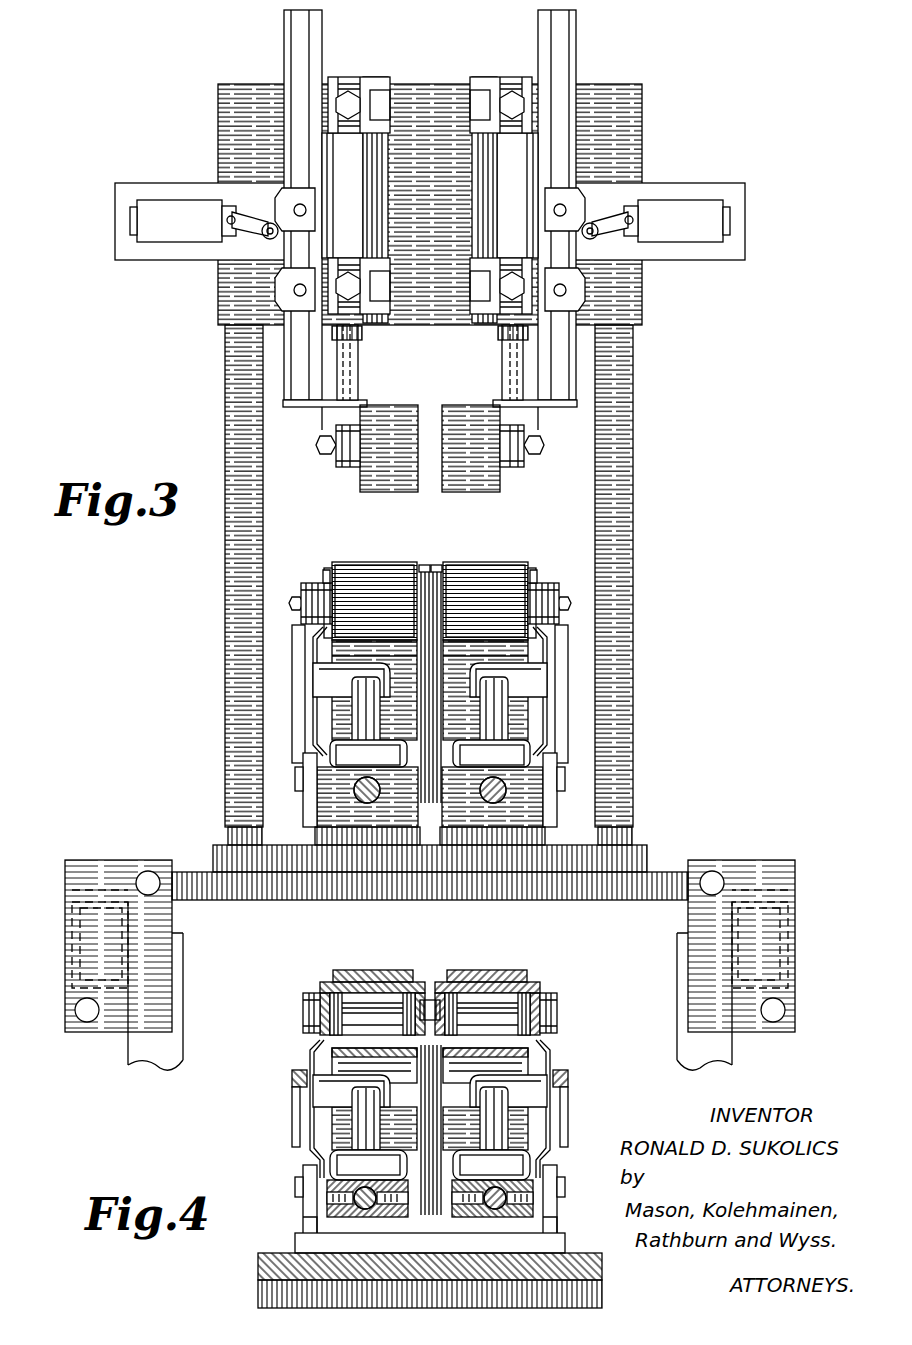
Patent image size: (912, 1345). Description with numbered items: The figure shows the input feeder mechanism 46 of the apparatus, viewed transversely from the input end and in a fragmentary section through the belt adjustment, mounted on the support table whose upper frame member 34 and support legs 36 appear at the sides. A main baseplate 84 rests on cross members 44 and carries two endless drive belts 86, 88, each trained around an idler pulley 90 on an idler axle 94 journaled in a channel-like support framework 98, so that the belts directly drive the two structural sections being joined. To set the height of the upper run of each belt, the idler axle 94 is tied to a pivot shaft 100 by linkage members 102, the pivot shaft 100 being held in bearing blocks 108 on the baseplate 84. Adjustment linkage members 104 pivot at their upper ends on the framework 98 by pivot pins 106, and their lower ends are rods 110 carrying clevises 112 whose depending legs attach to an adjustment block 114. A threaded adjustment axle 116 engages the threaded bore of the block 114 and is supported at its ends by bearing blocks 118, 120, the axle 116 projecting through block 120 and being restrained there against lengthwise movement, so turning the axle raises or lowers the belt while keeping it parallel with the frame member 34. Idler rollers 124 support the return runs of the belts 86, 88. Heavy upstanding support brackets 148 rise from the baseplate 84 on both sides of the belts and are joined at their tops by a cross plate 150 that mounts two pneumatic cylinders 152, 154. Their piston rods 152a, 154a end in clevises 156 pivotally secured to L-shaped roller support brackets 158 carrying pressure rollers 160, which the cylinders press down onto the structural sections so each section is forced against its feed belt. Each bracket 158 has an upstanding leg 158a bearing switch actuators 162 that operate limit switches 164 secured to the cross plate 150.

In FIG. 3, the upper frame member 34 is at (65, 953).
In FIG. 3, the support leg 36 is at (128, 1055).
In FIG. 3, the cross member 44 is at (248, 900).
In FIG. 4, the cross member 44 is at (258, 1294).
In FIG. 3, the input feeder mechanism 46 is at (733, 406).
In FIG. 3, the main baseplate 84 is at (655, 862).
In FIG. 4, the main baseplate 84 is at (258, 1262).
In FIG. 3, the endless drive belt 86 is at (378, 562).
In FIG. 4, the endless drive belt 86 is at (380, 1045).
In FIG. 3, the endless drive belt 88 is at (490, 562).
In FIG. 4, the endless drive belt 88 is at (480, 1045).
In FIG. 3, the idler pulley 90 is at (327, 568).
In FIG. 3, the idler axle 94 is at (290, 603).
In FIG. 3, the channel-like support framework 98 is at (323, 576).
In FIG. 4, the channel-like support framework 98 is at (306, 1008).
In FIG. 3, the pivot shaft 100 is at (295, 782).
In FIG. 4, the pivot shaft 100 is at (295, 1183).
In FIG. 3, the linkage member 102 is at (298, 690).
In FIG. 4, the linkage member 102 is at (292, 1078).
In FIG. 3, the adjustment linkage member 104 is at (316, 680).
In FIG. 4, the adjustment linkage member 104 is at (312, 1045).
In FIG. 4, the pivot pin 106 is at (370, 1010).
In FIG. 3, the bearing block 108 is at (304, 796).
In FIG. 4, the bearing block 108 is at (303, 1203).
In FIG. 3, the rod 110 is at (356, 722).
In FIG. 4, the rod 110 is at (358, 1115).
In FIG. 3, the clevis 112 is at (335, 757).
In FIG. 4, the clevis 112 is at (334, 1152).
In FIG. 4, the adjustment block 114 is at (340, 1212).
In FIG. 3, the threaded adjustment axle 116 is at (372, 802).
In FIG. 4, the threaded adjustment axle 116 is at (368, 1188).
In FIG. 4, the bearing block 118 is at (298, 1242).
In FIG. 3, the bearing block 120 is at (322, 815).
In FIG. 3, the idler roller 124 is at (332, 650).
In FIG. 4, the idler roller 124 is at (345, 1065).
In FIG. 3, the upstanding support bracket 148 is at (225, 440).
In FIG. 3, the cross plate 150 is at (630, 108).
In FIG. 3, the pneumatic cylinder 152 is at (386, 243).
In FIG. 3, the piston rod 152a is at (358, 362).
In FIG. 3, the pneumatic cylinder 154 is at (472, 208).
In FIG. 3, the piston rod 154a is at (502, 370).
In FIG. 3, the clevis 156 is at (322, 418).
In FIG. 3, the L-shaped roller support bracket 158 is at (345, 470).
In FIG. 3, the upstanding leg 158a is at (284, 26).
In FIG. 3, the pressure roller 160 is at (455, 492).
In FIG. 3, the switch actuator 162 is at (276, 200).
In FIG. 3, the limit switch 164 is at (160, 232).